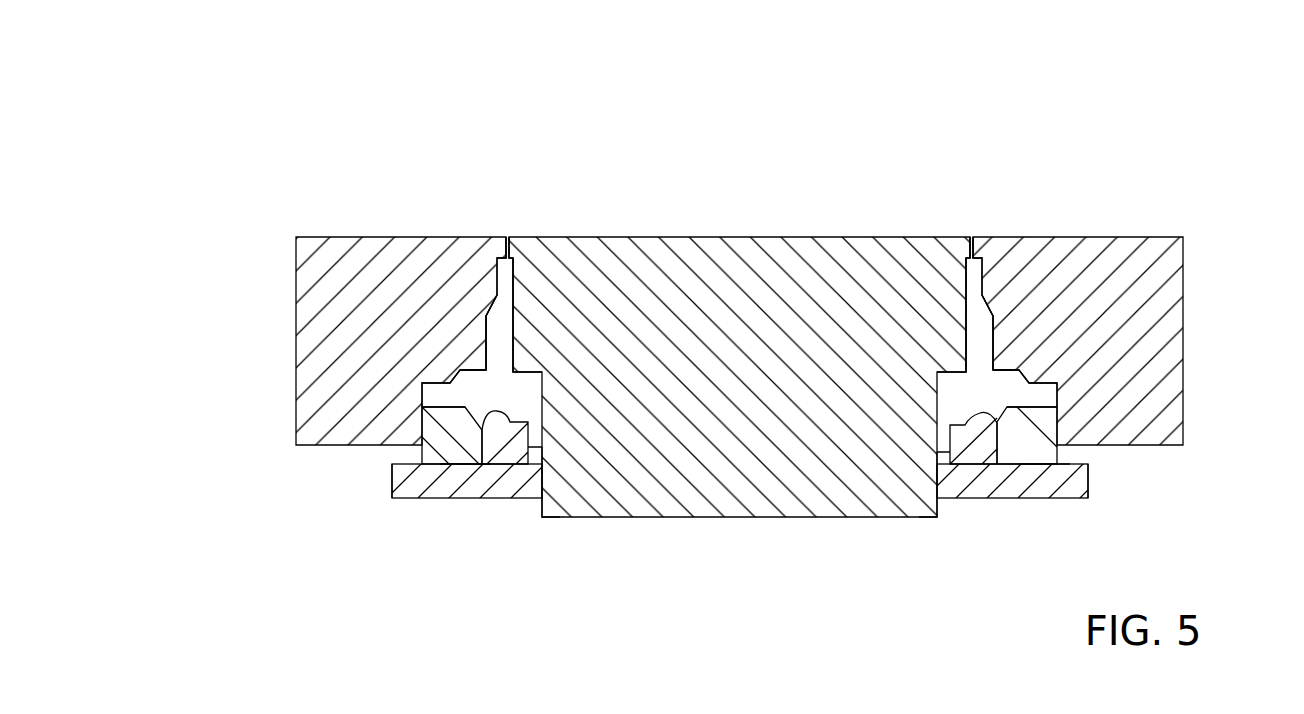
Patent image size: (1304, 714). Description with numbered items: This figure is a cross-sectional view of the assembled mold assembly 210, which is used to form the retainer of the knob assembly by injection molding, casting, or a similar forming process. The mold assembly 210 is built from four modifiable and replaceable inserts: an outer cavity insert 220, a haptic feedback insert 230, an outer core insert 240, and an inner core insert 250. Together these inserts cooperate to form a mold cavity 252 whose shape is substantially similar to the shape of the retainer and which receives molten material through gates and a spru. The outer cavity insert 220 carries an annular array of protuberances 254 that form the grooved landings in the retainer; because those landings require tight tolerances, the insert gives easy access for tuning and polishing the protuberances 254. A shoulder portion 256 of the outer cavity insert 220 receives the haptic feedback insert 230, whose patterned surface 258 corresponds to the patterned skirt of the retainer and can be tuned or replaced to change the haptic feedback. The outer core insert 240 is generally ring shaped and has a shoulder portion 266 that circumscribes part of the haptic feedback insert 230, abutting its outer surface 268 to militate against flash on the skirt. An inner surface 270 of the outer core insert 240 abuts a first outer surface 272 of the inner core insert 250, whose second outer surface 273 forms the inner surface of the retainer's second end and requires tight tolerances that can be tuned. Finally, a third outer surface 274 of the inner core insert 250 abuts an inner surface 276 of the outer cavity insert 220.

The mold assembly 210 is at (739, 330).
The outer cavity insert 220 is at (398, 508).
The haptic feedback insert 230 is at (465, 466).
The outer core insert 240 is at (290, 294).
The inner core insert 250 is at (868, 226).
The mold cavity 252 is at (988, 348).
The protuberances 254 is at (494, 418).
The shoulder portion 256 is at (392, 464).
The patterned surface 258 is at (296, 445).
The shoulder portion 266 is at (437, 380).
The outer surface 268 is at (420, 447).
The inner surface 270 is at (515, 245).
The first outer surface 272 is at (504, 250).
The second outer surface 273 is at (513, 317).
The third outer surface 274 is at (543, 519).
The inner surface 276 is at (545, 477).